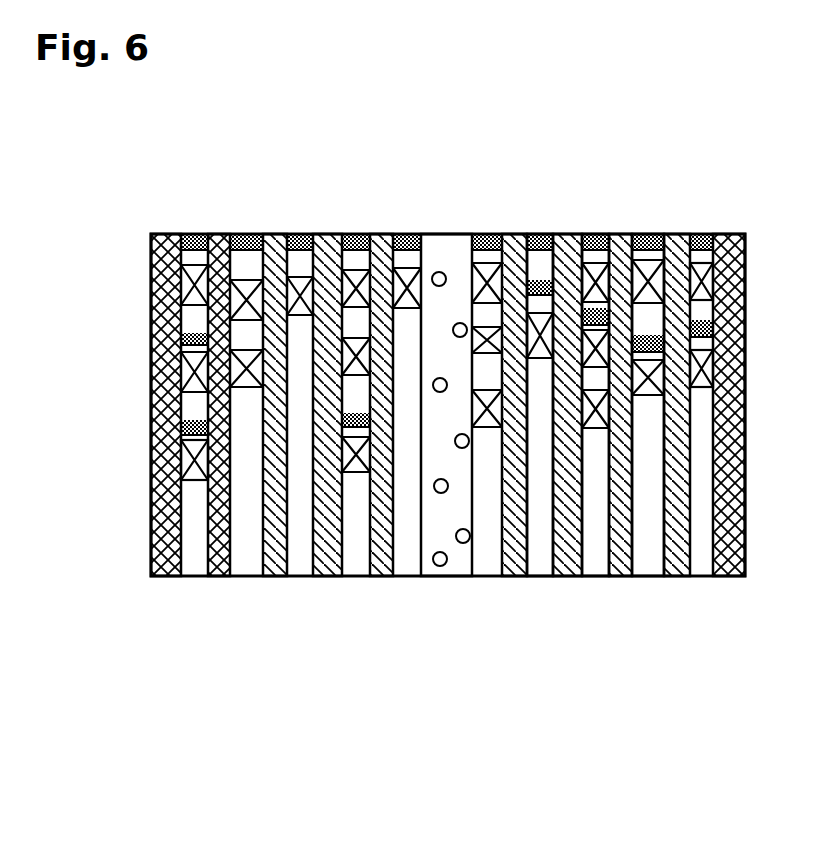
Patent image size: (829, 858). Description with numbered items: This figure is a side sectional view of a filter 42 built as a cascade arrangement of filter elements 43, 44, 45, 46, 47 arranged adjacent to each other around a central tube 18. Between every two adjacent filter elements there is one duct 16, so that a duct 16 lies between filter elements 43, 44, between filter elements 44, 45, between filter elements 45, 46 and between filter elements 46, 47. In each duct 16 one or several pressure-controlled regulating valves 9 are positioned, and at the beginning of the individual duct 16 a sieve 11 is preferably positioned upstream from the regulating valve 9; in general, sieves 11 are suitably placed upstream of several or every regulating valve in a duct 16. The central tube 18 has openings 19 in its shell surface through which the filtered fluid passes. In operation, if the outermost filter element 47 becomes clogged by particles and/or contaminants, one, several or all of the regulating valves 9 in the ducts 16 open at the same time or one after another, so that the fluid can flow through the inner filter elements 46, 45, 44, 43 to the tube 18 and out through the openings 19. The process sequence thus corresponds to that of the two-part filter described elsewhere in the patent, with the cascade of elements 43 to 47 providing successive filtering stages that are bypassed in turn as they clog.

The pressure-controlled regulating valve 9 is at (185, 468).
The sieve 11 is at (183, 343).
The duct 16 is at (539, 234).
The central tube 18 is at (466, 234).
The openings 19 is at (438, 272).
The filter 42 is at (592, 158).
The filter element 43 is at (386, 234).
The filter element 44 is at (330, 234).
The filter element 45 is at (275, 234).
The filter element 46 is at (220, 234).
The outermost filter element 47 is at (166, 234).